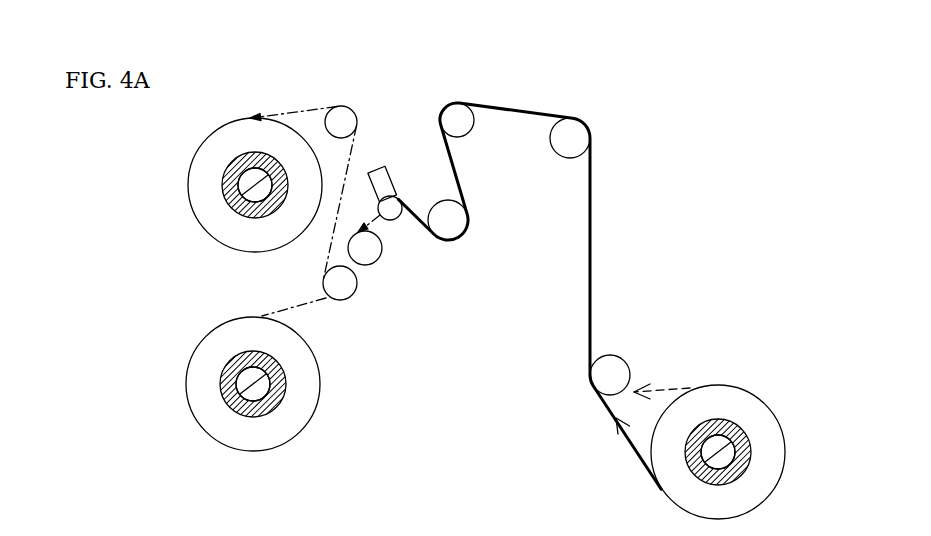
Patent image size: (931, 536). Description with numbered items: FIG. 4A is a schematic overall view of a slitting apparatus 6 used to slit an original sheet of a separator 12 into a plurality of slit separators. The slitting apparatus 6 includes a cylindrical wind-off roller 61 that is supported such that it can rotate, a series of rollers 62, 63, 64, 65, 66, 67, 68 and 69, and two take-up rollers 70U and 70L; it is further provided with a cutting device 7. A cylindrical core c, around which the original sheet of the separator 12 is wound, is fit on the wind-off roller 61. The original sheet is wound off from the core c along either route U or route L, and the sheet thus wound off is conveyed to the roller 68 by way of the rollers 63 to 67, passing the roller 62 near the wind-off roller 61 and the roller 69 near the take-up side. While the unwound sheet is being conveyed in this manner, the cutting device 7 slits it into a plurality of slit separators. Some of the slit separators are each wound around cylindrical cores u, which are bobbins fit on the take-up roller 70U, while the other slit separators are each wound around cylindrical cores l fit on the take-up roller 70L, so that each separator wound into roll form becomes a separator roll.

The slitting apparatus 6 is at (757, 96).
The cutting device 7 is at (373, 168).
The separator 12 is at (592, 233).
The wind-off roller 61 is at (700, 463).
The roller 62 is at (612, 357).
The roller 63 is at (590, 129).
The roller 64 is at (453, 105).
The roller 65 is at (467, 221).
The roller 66 is at (397, 200).
The roller 67 is at (372, 262).
The roller 68 is at (343, 296).
The roller 69 is at (349, 107).
The take-up roller 70U is at (238, 197).
The take-up roller 70L is at (236, 398).
The cylindrical core u is at (236, 185).
The cylindrical core l is at (236, 385).
The cylindrical core c is at (747, 465).
The route U is at (662, 381).
The route L is at (620, 445).